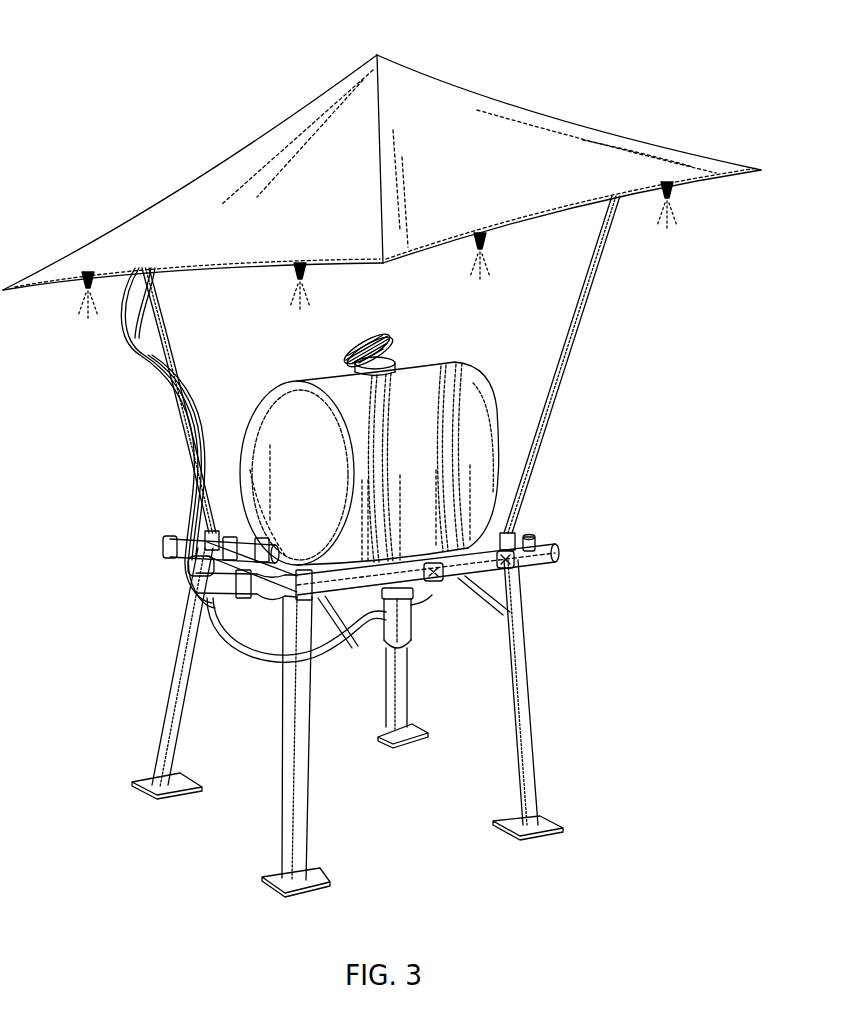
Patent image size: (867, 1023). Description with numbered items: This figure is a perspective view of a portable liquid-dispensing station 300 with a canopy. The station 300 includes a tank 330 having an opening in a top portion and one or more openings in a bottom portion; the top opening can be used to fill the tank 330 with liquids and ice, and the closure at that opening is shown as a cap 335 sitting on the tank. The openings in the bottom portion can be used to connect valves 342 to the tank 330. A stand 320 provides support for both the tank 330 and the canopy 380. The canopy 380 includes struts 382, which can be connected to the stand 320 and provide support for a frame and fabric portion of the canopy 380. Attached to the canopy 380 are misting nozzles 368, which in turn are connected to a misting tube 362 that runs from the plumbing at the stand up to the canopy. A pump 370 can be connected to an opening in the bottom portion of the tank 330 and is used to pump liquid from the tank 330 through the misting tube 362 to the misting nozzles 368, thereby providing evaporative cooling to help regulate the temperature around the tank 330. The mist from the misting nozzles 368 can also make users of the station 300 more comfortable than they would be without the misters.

The station 300 is at (112, 50).
The stand 320 is at (160, 732).
The tank 330 is at (453, 367).
The tank cap 335 is at (385, 337).
The valves 342 is at (242, 598).
The misting tube 362 is at (124, 346).
The misting nozzles 368 is at (82, 286).
The pump 370 is at (418, 627).
The canopy 380 is at (492, 100).
The struts 382 is at (152, 306).